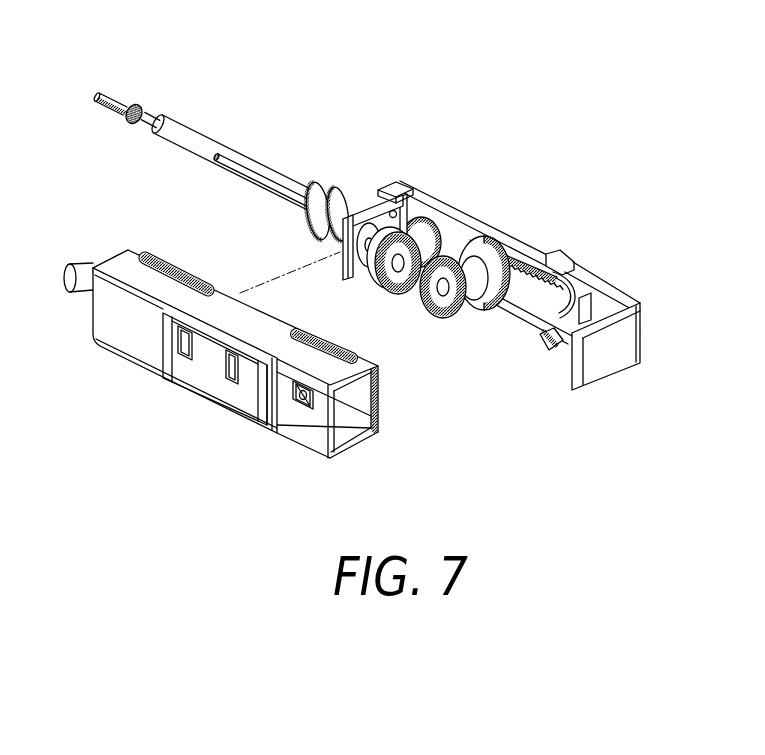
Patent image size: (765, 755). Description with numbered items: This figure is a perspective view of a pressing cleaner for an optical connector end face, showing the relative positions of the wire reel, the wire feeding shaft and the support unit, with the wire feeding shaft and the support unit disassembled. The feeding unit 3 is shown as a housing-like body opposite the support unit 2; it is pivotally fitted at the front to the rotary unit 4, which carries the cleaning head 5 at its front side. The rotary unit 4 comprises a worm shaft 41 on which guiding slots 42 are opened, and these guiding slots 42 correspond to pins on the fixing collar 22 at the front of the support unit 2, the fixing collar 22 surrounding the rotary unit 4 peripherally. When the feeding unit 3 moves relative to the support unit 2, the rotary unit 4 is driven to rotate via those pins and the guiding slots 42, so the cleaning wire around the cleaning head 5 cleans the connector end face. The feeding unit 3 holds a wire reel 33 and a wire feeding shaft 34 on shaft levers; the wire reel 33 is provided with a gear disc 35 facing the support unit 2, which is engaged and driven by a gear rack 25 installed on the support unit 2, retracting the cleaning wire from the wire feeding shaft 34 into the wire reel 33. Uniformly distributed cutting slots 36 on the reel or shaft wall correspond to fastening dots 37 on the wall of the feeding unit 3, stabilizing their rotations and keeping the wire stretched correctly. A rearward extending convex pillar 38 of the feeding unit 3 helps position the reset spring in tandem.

The support unit 2 is at (516, 228).
The feeding unit 3 is at (229, 296).
The rotary unit 4 is at (196, 135).
The cleaning head 5 is at (116, 93).
The fixing collar 22 is at (364, 276).
The gear rack 25 is at (537, 277).
The wire reel 33 is at (437, 314).
The wire feeding shaft 34 is at (398, 294).
The gear disc 35 is at (493, 318).
The cutting slots 36 is at (458, 321).
The fastening dots 37 is at (221, 373).
The convex pillar 38 is at (312, 420).
The worm shaft 41 is at (326, 182).
The guiding slots 42 is at (347, 190).